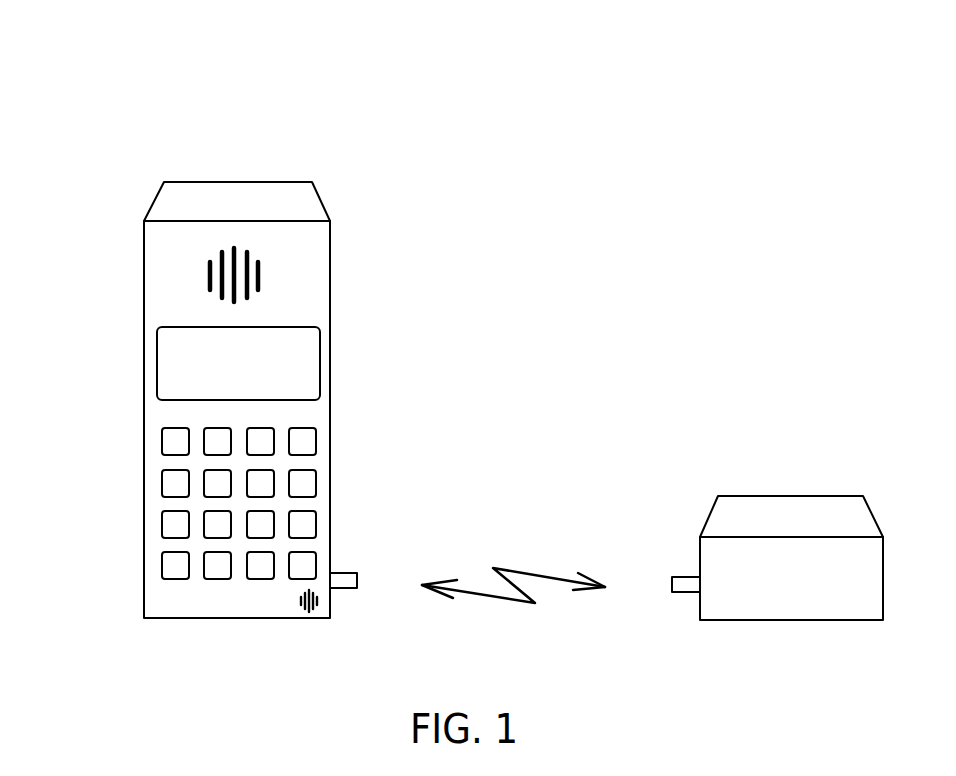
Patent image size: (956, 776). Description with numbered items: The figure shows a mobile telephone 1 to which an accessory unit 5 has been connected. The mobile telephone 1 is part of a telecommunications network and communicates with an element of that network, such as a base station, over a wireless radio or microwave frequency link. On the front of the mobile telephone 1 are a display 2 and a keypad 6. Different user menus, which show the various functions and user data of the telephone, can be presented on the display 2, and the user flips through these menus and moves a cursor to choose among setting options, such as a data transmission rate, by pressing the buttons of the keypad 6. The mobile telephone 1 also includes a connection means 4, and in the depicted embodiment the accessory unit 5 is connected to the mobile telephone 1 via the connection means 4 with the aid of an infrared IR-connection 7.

The mobile telephone 1 is at (58, 63).
The display 2 is at (308, 368).
The connection means 4 is at (335, 573).
The accessory unit 5 is at (750, 515).
The keypad 6 is at (305, 487).
The IR-connection 7 is at (517, 570).